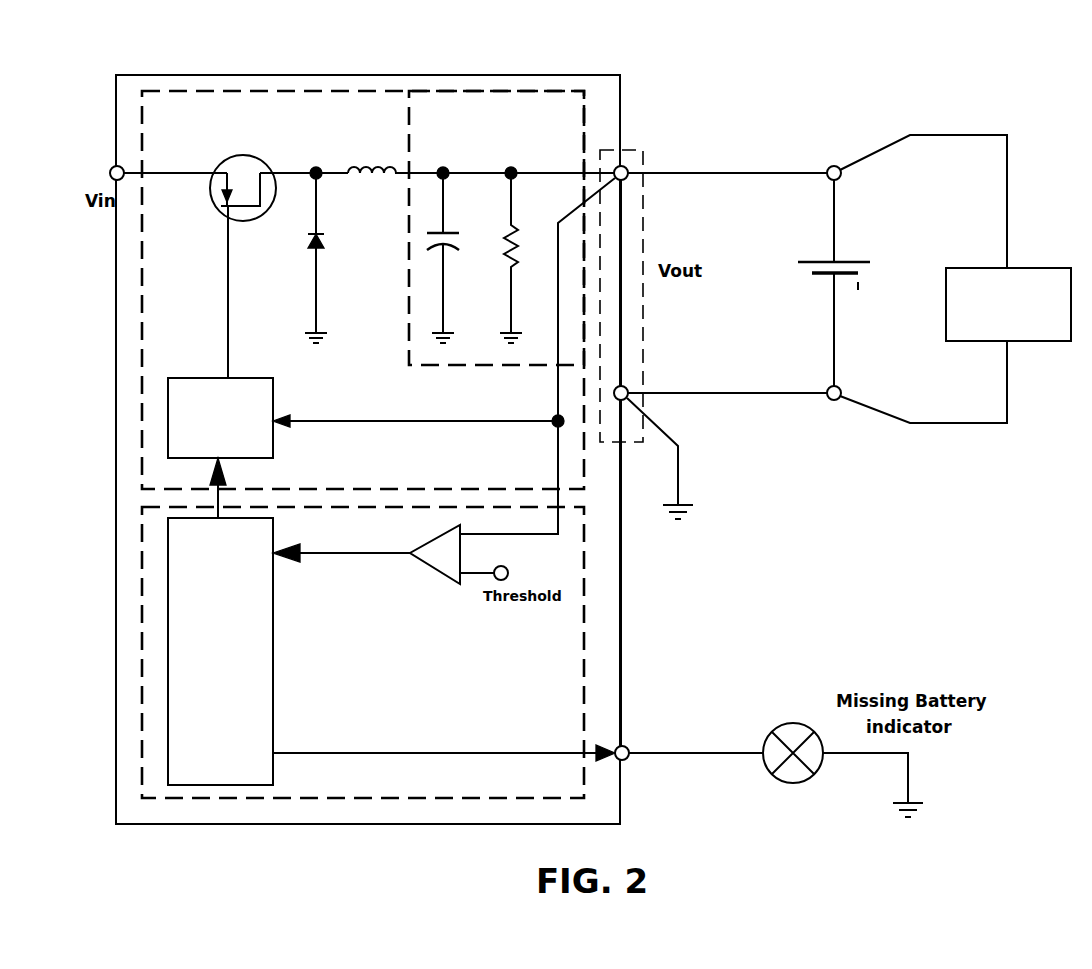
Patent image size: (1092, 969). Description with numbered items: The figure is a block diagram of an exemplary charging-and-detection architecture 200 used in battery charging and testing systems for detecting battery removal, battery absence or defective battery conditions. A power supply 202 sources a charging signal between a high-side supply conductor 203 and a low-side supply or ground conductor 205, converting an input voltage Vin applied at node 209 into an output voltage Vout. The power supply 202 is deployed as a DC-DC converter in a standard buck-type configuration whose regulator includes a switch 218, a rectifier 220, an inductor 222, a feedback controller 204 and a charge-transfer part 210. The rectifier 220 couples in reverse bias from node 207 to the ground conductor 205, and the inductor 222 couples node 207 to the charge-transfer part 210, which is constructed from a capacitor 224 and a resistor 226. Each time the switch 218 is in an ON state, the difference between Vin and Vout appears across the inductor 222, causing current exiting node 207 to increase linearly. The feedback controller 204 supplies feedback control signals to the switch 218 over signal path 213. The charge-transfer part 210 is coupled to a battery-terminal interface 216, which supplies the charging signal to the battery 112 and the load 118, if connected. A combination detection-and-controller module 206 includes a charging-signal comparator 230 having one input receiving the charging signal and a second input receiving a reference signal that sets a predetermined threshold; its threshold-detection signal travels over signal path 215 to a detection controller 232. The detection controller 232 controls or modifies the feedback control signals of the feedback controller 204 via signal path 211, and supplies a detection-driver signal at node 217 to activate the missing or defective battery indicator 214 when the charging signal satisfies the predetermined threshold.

The charging-and-detection architecture 200 is at (1001, 93).
The power supply 202 is at (142, 325).
The high-side supply conductor 203 is at (715, 172).
The feedback controller 204 is at (363, 418).
The low-side supply or ground conductor 205 is at (722, 393).
The combination detection-and-controller module 206 is at (142, 655).
The node 207 is at (318, 165).
The node 209 is at (110, 170).
The charge-transfer part 210 is at (538, 91).
The signal path 211 is at (220, 497).
The signal path 213 is at (228, 275).
The missing or defective battery indicator 214 is at (793, 723).
The signal path 215 is at (345, 556).
The battery-terminal interface 216 is at (625, 158).
The node 217 is at (628, 760).
The switch 218 is at (243, 156).
The rectifier 220 is at (322, 246).
The inductor 222 is at (372, 184).
The capacitor 224 is at (447, 232).
The resistor 226 is at (514, 228).
The charging-signal comparator 230 is at (459, 554).
The detection controller 232 is at (220, 651).
The battery 112 is at (854, 283).
The load 118 is at (955, 279).